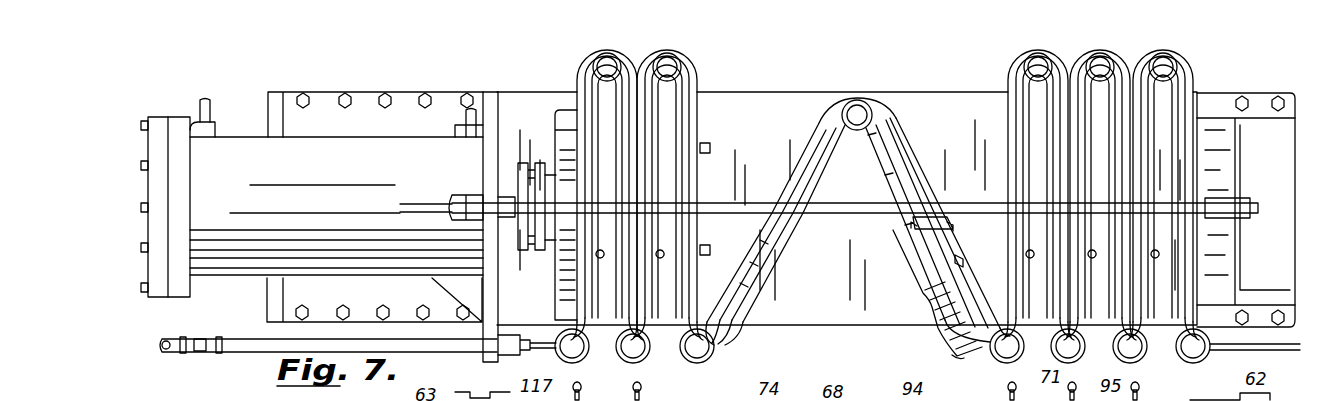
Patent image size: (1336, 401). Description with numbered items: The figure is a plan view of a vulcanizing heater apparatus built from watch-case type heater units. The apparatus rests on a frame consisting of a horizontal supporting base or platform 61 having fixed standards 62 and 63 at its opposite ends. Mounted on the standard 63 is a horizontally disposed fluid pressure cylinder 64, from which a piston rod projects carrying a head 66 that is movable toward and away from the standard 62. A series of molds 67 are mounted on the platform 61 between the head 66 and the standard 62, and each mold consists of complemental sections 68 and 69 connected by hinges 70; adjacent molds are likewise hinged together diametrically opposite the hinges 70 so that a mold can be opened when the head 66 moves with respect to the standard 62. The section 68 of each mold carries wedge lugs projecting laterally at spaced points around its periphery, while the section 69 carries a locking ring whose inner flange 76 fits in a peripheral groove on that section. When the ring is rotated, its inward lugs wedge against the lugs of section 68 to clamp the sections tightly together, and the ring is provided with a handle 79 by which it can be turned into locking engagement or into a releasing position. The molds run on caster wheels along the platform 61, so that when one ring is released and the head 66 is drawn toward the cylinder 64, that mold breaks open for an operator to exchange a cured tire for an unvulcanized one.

The platform 61 is at (957, 105).
The standard 62 is at (1222, 120).
The standard 63 is at (490, 95).
The fluid pressure cylinder 64 is at (244, 145).
The head 66 is at (555, 255).
The molds 67 is at (628, 72).
The mold section 68 is at (785, 197).
The mold section 69 is at (905, 140).
The hinges 70 is at (670, 66).
The inner flange 76 is at (948, 352).
The handle 79 is at (930, 340).